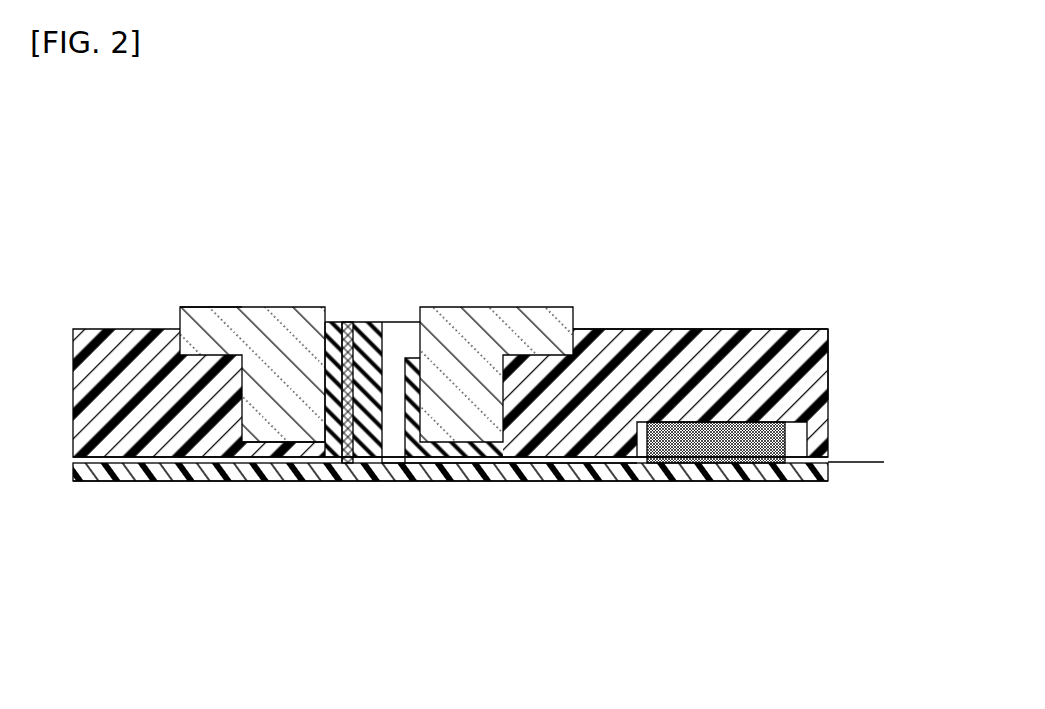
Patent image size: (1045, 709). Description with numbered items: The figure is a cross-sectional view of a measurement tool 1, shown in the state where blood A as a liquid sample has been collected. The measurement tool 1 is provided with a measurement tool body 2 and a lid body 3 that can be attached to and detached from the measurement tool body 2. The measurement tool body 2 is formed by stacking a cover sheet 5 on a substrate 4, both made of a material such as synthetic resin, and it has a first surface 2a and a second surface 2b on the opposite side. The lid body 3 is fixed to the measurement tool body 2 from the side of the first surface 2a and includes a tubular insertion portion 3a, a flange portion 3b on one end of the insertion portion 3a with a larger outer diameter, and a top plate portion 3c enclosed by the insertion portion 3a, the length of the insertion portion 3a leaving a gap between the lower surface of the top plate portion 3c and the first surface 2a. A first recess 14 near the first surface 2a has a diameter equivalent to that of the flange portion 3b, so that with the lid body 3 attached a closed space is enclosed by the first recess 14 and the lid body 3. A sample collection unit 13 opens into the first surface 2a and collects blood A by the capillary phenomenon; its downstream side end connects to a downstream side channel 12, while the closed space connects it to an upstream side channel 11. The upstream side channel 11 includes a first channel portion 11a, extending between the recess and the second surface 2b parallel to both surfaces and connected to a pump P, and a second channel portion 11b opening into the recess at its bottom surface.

The measurement tool 1 is at (103, 167).
The measurement tool body 2 is at (838, 395).
The first surface 2a is at (758, 329).
The second surface 2b is at (558, 482).
The lid body 3 is at (230, 297).
The insertion portion 3a is at (288, 413).
The flange portion 3b is at (190, 306).
The top plate portion 3c is at (368, 316).
The substrate 4 is at (795, 338).
The cover sheet 5 is at (810, 482).
The upstream side channel 11 is at (505, 627).
The first channel portion 11a is at (522, 460).
The second channel portion 11b is at (358, 432).
The downstream side channel 12 is at (170, 476).
The sample collection unit 13 is at (375, 338).
The first recess 14 is at (427, 308).
The blood A is at (347, 323).
The pump P is at (874, 462).